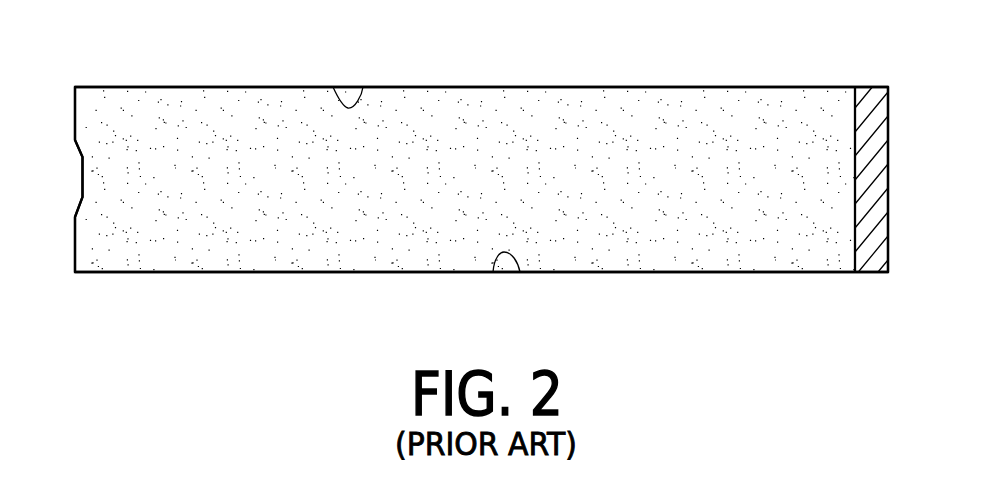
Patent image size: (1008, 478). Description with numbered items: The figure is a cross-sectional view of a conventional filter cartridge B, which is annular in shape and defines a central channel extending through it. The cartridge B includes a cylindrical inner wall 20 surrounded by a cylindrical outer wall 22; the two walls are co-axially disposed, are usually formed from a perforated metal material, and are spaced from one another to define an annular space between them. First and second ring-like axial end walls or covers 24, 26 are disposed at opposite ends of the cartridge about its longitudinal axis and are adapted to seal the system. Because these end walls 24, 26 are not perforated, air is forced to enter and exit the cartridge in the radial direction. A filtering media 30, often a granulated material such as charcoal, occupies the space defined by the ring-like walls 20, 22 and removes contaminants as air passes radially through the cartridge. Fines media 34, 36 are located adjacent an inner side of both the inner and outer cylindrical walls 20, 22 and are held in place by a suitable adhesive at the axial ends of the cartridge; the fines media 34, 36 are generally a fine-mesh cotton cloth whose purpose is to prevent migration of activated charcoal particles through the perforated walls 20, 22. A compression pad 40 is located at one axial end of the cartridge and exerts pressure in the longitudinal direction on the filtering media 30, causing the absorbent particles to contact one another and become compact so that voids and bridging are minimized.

The conventional filter cartridge B is at (237, 80).
The cylindrical inner wall 20 is at (680, 272).
The cylindrical outer wall 22 is at (562, 87).
The first ring-like axial end wall 24 is at (904, 152).
The second ring-like axial end wall 26 is at (74, 112).
The filtering media 30 is at (383, 253).
The fines media 34 is at (493, 272).
The fines media 36 is at (334, 89).
The compression pad 40 is at (867, 262).